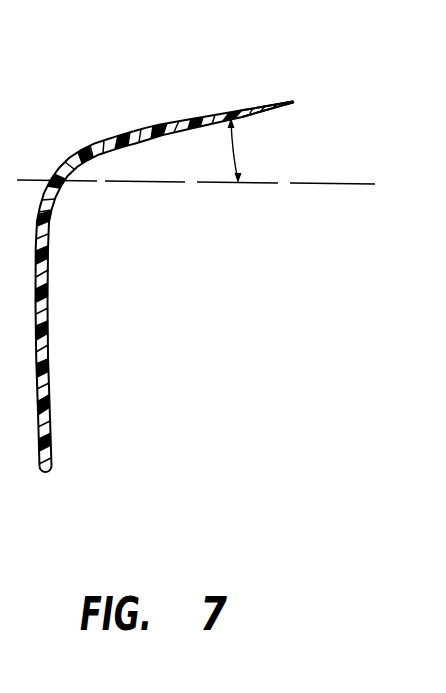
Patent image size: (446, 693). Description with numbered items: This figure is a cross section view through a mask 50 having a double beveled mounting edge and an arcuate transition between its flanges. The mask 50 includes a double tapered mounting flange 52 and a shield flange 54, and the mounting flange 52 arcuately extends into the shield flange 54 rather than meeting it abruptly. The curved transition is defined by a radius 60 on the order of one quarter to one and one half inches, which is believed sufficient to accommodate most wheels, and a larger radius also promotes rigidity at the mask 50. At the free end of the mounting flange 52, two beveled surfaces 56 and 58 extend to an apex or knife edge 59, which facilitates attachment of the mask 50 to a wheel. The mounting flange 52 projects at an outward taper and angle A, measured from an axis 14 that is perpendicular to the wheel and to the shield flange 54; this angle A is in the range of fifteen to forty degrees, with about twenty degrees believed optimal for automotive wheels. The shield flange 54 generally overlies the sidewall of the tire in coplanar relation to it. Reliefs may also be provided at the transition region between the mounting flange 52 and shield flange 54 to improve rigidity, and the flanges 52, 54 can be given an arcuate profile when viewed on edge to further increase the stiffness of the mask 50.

The axis 14 is at (290, 187).
The mask 50 is at (211, 255).
The double tapered mounting flange 52 is at (148, 127).
The shield flange 54 is at (50, 380).
The beveled surface 56 is at (287, 106).
The beveled surface 58 is at (268, 104).
The apex or knife edge 59 is at (293, 102).
The radius 60 is at (51, 182).
The angle A is at (227, 150).